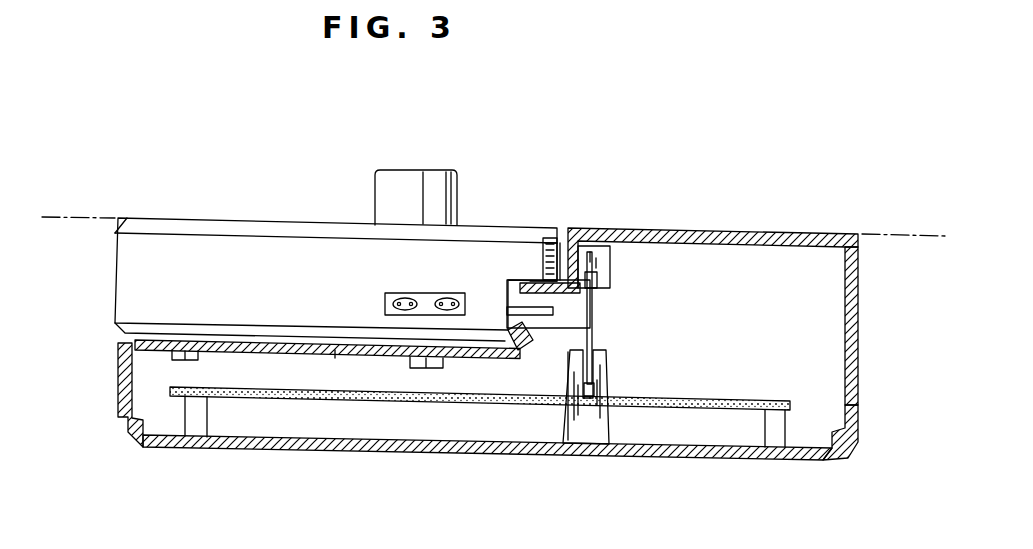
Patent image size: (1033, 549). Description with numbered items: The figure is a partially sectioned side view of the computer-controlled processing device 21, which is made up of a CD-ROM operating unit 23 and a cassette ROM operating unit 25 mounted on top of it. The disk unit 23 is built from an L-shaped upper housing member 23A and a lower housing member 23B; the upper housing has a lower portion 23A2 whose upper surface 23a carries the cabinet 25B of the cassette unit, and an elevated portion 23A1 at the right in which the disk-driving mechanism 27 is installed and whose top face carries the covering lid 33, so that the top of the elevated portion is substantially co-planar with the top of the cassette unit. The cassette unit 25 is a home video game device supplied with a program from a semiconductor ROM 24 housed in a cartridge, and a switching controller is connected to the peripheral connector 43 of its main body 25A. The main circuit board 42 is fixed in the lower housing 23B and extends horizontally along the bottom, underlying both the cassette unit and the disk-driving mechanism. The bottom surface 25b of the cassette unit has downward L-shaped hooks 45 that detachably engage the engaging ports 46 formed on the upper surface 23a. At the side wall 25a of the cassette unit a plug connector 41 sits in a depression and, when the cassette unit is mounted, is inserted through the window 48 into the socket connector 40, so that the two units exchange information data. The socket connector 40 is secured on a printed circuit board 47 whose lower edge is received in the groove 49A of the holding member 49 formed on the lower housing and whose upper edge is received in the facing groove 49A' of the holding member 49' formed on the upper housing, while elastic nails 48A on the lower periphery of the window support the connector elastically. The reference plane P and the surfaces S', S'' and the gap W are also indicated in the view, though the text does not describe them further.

The computer-controlled processing device 21 is at (614, 203).
The CD-ROM operating unit 23 is at (825, 222).
The upper surface 23a is at (286, 340).
The upper housing member 23A is at (858, 300).
The elevated portion 23A1 is at (858, 335).
The lower portion 23A2 is at (318, 448).
The lower housing member 23B is at (335, 358).
The semiconductor ROM 24 is at (421, 170).
The cassette ROM operating unit 25 is at (303, 210).
The main body 25A is at (243, 233).
The cabinet 25B is at (178, 219).
The side wall 25a is at (511, 280).
The bottom surface 25b is at (128, 336).
The disk-driving mechanism 27 is at (767, 336).
The covering lid 33 is at (720, 230).
The socket connector 40 is at (541, 275).
The plug connector 41 is at (535, 318).
The main circuit board 42 is at (290, 400).
The peripheral connector 43 is at (402, 293).
The hooks 45 is at (207, 400).
The engaging ports 46 is at (177, 345).
The printed circuit board 47 is at (596, 320).
The window 48 is at (503, 353).
The elastic nails 48A is at (505, 325).
The holding member 49 is at (585, 435).
The holding member 49' is at (634, 267).
The groove 49A is at (627, 440).
The groove 49A' is at (640, 294).
The reference plane P is at (893, 234).
The surface S' is at (790, 161).
The surface S'' is at (100, 177).
The gap W is at (560, 245).